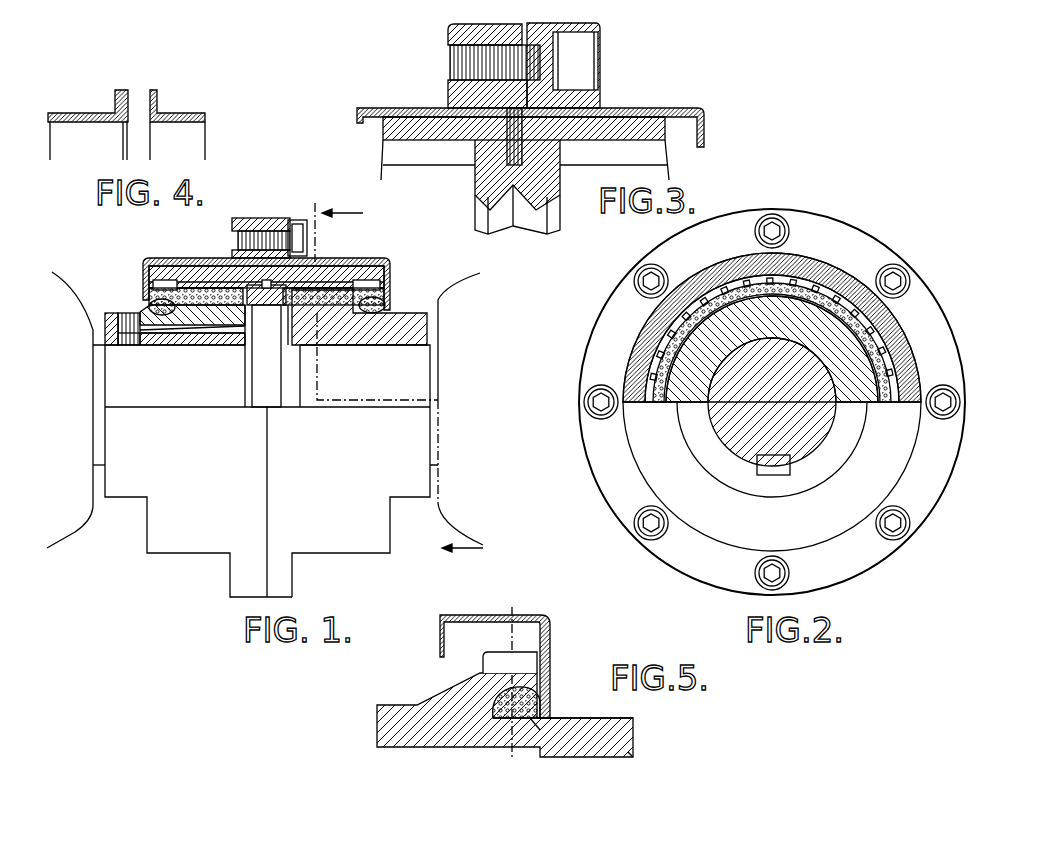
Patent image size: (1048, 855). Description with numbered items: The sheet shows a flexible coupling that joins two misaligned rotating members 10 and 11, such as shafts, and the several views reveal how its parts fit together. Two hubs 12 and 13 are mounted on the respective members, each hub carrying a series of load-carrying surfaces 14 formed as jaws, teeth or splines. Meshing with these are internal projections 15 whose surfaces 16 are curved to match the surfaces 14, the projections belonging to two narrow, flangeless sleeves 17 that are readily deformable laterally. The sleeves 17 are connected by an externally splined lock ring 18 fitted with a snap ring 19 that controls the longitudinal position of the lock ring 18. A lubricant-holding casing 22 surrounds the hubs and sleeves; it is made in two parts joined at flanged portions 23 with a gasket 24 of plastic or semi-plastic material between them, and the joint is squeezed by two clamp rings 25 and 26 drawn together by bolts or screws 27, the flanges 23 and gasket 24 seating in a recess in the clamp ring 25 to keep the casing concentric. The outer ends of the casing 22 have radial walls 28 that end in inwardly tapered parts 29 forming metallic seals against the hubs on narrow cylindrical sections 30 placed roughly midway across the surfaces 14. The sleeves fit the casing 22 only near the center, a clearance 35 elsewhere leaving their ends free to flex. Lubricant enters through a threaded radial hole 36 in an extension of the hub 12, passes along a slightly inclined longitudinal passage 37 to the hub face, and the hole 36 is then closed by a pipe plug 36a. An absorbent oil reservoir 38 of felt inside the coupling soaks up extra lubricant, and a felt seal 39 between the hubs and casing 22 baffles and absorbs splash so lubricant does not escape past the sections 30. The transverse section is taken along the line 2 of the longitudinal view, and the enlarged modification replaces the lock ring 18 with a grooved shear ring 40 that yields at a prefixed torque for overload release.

In FIG. 1, the member 10 is at (238, 434).
In FIG. 1, the member 11 is at (387, 435).
In FIG. 2, the member 11 is at (830, 422).
In FIG. 1, the hub 12 is at (190, 345).
In FIG. 1, the hub 13 is at (362, 338).
In FIG. 2, the hub 13 is at (870, 365).
In FIG. 5, the hub 13 is at (405, 715).
In FIG. 1, the load-carrying surfaces 14 is at (165, 283).
In FIG. 5, the load-carrying surfaces 14 is at (520, 663).
In FIG. 2, the internal projections 15 is at (640, 347).
In FIG. 1, the surfaces 16 is at (205, 278).
In FIG. 3, the surfaces 16 is at (438, 152).
In FIG. 1, the sleeves 17 is at (238, 270).
In FIG. 3, the sleeves 17 is at (525, 148).
In FIG. 2, the sleeves 17 is at (625, 380).
In FIG. 1, the lock ring 18 is at (271, 305).
In FIG. 3, the snap ring 19 is at (512, 160).
In FIG. 1, the section line 2 is at (407, 381).
In FIG. 1, the lubricant-holding casing 22 is at (143, 270).
In FIG. 3, the lubricant-holding casing 22 is at (642, 110).
In FIG. 2, the lubricant-holding casing 22 is at (840, 272).
In FIG. 5, the lubricant-holding casing 22 is at (478, 617).
In FIG. 4, the flanged portions 23 is at (118, 103).
In FIG. 4, the gasket 24 is at (132, 103).
In FIG. 1, the clamp ring 25 is at (256, 220).
In FIG. 3, the clamp ring 25 is at (446, 38).
In FIG. 1, the clamp ring 26 is at (296, 220).
In FIG. 3, the clamp ring 26 is at (605, 30).
In FIG. 2, the clamp ring 26 is at (820, 240).
In FIG. 3, the bolts or screws 27 is at (585, 72).
In FIG. 2, the bolts or screws 27 is at (897, 284).
In FIG. 5, the radial walls 28 is at (545, 690).
In FIG. 5, the tapered parts 29 is at (530, 722).
In FIG. 5, the cylindrical sections 30 is at (498, 722).
In FIG. 1, the clearance 35 is at (262, 272).
In FIG. 3, the clearance 35 is at (378, 120).
In FIG. 1, the radial hole 36 is at (118, 320).
In FIG. 1, the pipe plug 36a is at (126, 334).
In FIG. 1, the longitudinal passage 37 is at (212, 330).
In FIG. 1, the absorbent oil reservoir 38 is at (225, 290).
In FIG. 2, the absorbent oil reservoir 38 is at (745, 285).
In FIG. 1, the felt seal 39 is at (150, 300).
In FIG. 5, the felt seal 39 is at (546, 710).
In FIG. 3, the shear ring 40 is at (517, 187).